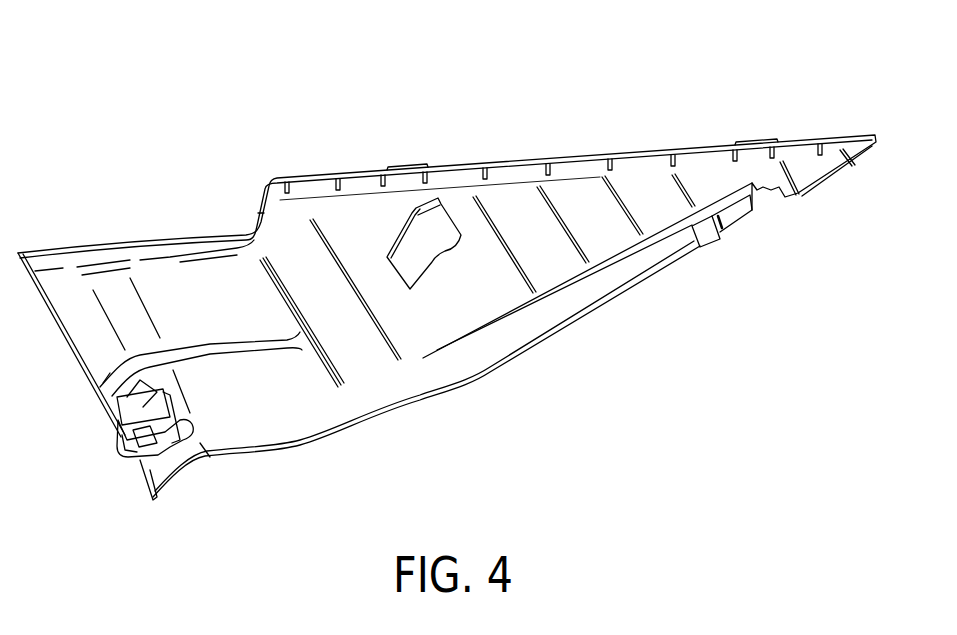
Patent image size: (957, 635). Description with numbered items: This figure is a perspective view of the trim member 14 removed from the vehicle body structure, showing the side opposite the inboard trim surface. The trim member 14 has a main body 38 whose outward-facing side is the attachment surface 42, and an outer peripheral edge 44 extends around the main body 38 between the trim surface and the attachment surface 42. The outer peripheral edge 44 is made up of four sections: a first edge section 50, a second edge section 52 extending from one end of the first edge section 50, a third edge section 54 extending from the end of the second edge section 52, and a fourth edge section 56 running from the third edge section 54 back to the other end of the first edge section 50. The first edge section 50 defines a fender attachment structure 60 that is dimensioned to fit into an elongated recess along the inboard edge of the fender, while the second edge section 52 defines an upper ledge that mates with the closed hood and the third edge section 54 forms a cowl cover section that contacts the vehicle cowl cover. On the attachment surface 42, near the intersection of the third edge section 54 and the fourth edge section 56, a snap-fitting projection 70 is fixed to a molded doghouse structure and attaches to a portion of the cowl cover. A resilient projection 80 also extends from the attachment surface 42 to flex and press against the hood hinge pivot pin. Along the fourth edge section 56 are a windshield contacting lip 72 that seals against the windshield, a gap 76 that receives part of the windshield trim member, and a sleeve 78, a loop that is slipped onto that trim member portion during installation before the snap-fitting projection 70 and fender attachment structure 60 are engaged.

The trim member 14 is at (613, 78).
The main body 38 is at (363, 263).
The attachment surface 42 is at (517, 210).
The outer peripheral edge 44 is at (302, 176).
The first edge section 50 is at (617, 157).
The second edge section 52 is at (153, 238).
The third edge section 54 is at (80, 363).
The fourth edge section 56 is at (368, 428).
The fender attachment structure 60 is at (703, 150).
The snap-fitting projection 70 is at (117, 457).
The windshield contacting lip 72 is at (530, 345).
The gap 76 is at (753, 208).
The sleeve 78 is at (710, 247).
The projection 80 is at (413, 258).